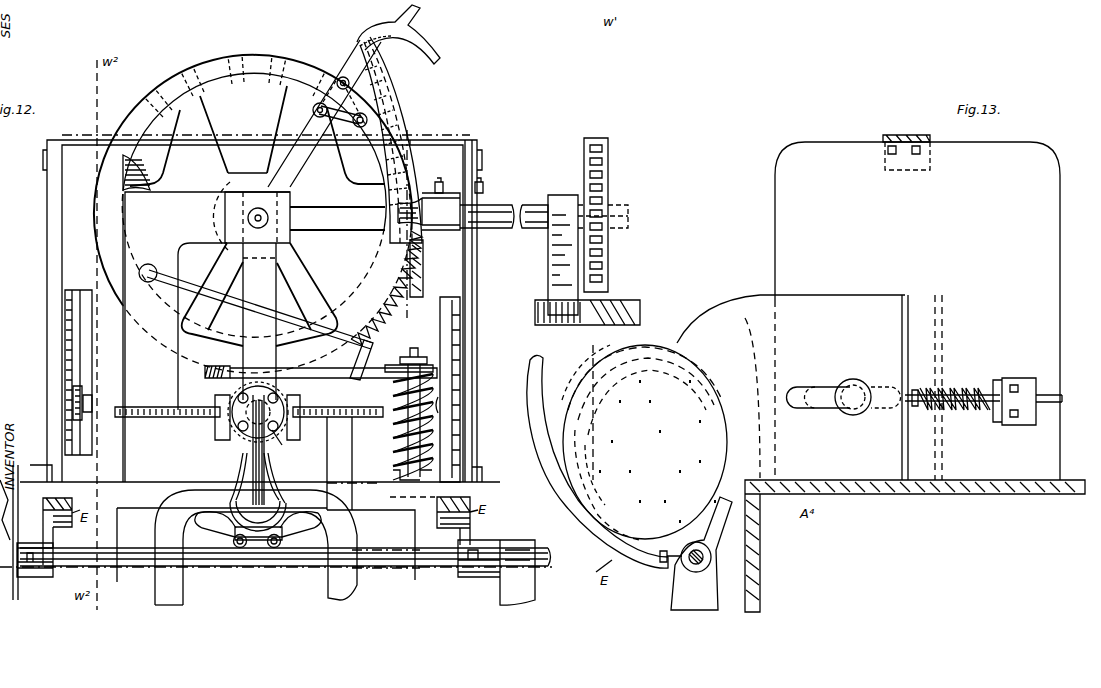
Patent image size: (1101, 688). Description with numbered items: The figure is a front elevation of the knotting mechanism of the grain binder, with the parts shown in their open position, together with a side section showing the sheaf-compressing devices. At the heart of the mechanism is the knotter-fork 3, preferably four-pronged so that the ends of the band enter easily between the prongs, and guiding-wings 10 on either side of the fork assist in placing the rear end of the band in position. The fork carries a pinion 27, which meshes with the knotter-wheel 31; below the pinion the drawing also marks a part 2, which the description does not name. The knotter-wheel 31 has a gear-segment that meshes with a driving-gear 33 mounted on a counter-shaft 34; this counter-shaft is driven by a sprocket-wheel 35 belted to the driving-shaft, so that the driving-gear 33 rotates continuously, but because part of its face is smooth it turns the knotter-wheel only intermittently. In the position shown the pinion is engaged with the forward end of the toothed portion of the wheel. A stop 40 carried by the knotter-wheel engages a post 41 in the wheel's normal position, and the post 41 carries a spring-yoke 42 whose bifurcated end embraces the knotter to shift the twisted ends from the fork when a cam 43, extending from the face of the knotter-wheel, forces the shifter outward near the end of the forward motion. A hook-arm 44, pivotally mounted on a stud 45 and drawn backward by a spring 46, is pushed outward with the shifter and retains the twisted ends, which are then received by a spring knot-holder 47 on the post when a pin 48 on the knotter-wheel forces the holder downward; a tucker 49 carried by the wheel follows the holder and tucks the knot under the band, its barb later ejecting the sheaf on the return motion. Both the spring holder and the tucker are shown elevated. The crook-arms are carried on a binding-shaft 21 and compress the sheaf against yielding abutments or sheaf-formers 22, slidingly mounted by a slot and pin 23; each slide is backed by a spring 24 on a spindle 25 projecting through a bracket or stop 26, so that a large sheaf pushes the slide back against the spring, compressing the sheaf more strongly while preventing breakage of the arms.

In FIG. 12, the connecting rod 2 is at (268, 472).
In FIG. 12, the knotter-fork 3 is at (238, 430).
In FIG. 12, the guiding-wings 10 is at (120, 420).
In FIG. 12, the binding-shaft 21 is at (268, 568).
In FIG. 13, the binding-shaft 21 is at (711, 556).
In FIG. 12, the sheaf-formers 22 is at (66, 338).
In FIG. 13, the sheaf-formers 22 is at (661, 417).
In FIG. 12, the slot and pin 23 is at (84, 392).
In FIG. 13, the slot and pin 23 is at (838, 380).
In FIG. 12, the spring 24 is at (92, 404).
In FIG. 13, the spring 24 is at (965, 385).
In FIG. 13, the spindle 25 is at (1050, 398).
In FIG. 13, the bracket or stop 26 is at (1000, 428).
In FIG. 12, the pinion 27 is at (286, 442).
In FIG. 12, the knotter-wheel 31 is at (385, 266).
In FIG. 12, the driving-gear 33 is at (425, 272).
In FIG. 12, the counter-shaft 34 is at (498, 200).
In FIG. 12, the sprocket-wheel 35 is at (606, 135).
In FIG. 12, the stop 40 is at (152, 178).
In FIG. 12, the post 41 is at (206, 337).
In FIG. 12, the spring-yoke 42 is at (259, 321).
In FIG. 12, the cam 43 is at (375, 158).
In FIG. 12, the hook-arm 44 is at (205, 378).
In FIG. 12, the stud 45 is at (414, 347).
In FIG. 12, the spring 46 is at (388, 384).
In FIG. 12, the spring knot-holder 47 is at (362, 332).
In FIG. 12, the pin 48 is at (368, 112).
In FIG. 12, the tucker 49 is at (405, 8).